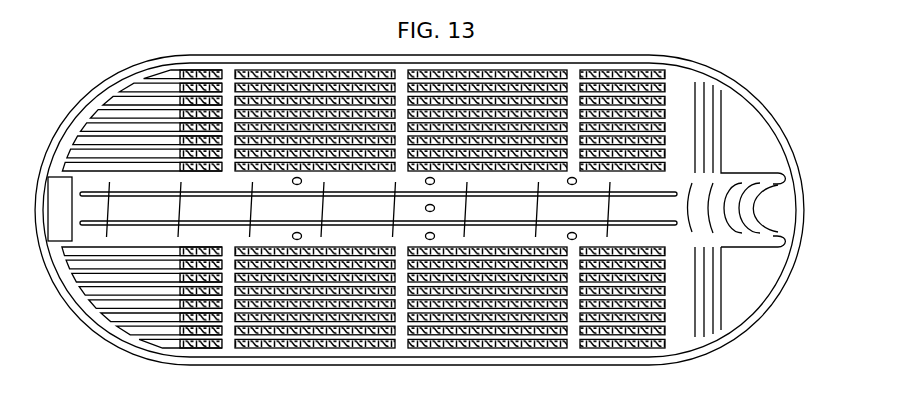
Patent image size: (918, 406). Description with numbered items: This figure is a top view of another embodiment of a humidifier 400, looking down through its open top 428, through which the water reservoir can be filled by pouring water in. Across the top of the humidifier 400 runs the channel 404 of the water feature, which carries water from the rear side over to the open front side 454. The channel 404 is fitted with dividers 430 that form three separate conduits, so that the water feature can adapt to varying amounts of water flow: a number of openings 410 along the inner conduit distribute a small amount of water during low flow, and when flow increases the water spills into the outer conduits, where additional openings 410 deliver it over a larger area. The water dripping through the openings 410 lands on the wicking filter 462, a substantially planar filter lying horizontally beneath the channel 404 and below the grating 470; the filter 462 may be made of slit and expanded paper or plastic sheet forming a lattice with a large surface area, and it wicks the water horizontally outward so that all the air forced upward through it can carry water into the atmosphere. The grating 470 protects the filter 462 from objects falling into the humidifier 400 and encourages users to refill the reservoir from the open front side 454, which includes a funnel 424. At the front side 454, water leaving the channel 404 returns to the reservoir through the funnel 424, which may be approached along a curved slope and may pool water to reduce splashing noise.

The humidifier 400 is at (99, 360).
The channel 404 is at (141, 197).
The openings 410 is at (425, 208).
The funnel 424 is at (777, 212).
The open top 428 is at (755, 140).
The dividers 430 is at (598, 222).
The open front side 454 is at (780, 352).
The wicking filter 462 is at (445, 320).
The grating 470 is at (138, 287).